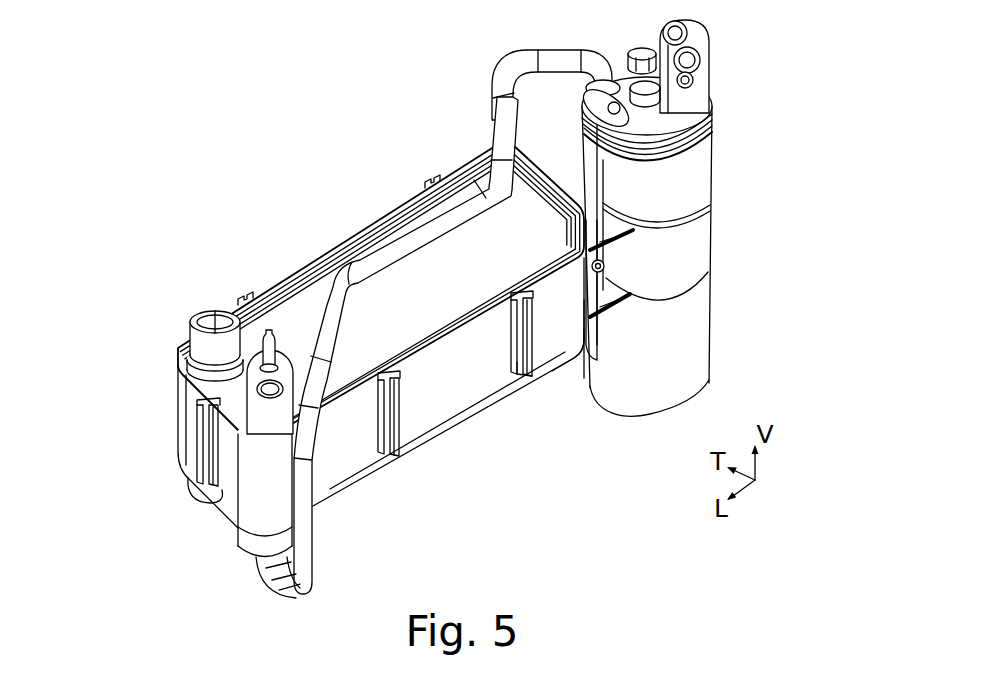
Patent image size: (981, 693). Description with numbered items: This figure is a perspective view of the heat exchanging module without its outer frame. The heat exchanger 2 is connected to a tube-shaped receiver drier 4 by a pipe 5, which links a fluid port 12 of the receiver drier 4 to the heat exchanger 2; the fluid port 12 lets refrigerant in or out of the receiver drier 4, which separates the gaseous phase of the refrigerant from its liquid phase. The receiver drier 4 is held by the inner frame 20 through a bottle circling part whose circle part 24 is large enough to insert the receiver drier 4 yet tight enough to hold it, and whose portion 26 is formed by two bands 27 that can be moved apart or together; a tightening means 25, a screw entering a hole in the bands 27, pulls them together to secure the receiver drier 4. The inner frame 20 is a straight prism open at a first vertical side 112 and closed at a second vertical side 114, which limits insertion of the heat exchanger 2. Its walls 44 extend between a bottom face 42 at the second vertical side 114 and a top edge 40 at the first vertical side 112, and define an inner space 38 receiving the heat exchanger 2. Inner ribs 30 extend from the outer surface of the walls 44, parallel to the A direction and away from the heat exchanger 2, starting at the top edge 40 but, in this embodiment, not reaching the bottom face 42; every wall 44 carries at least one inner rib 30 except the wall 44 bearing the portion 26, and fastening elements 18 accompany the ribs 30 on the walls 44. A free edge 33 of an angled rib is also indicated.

The heat exchanger 2 is at (427, 296).
The receiver drier 4 is at (697, 172).
The pipe 5 is at (303, 558).
The fluid port 12 is at (698, 66).
The fastening element 18 is at (315, 434).
The inner frame 20 is at (238, 507).
The circle part 24 is at (690, 232).
The tightening means 25 is at (605, 266).
The portion 26 is at (610, 305).
The bands 27 is at (570, 197).
The inner rib 30 is at (208, 428).
The free edge 33 is at (516, 362).
The inner space 38 is at (292, 325).
The top edge 40 is at (366, 478).
The bottom face 42 is at (393, 400).
The walls 44 is at (187, 445).
The first vertical side 112 is at (302, 262).
The second vertical side 114 is at (571, 370).